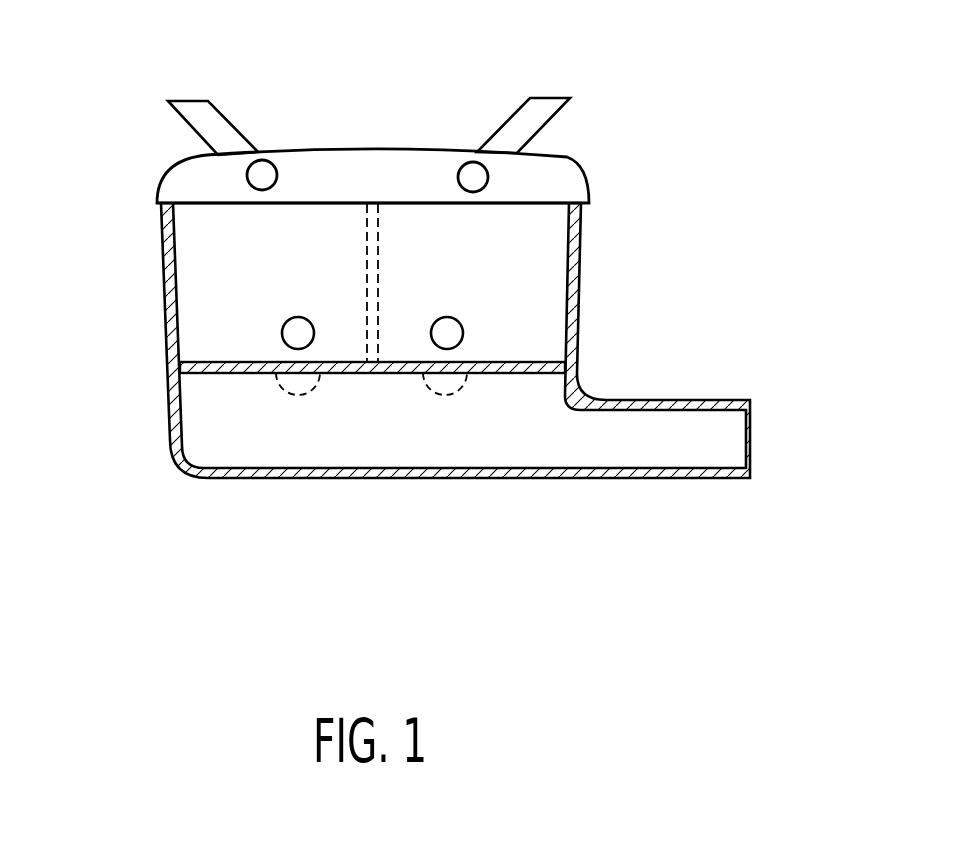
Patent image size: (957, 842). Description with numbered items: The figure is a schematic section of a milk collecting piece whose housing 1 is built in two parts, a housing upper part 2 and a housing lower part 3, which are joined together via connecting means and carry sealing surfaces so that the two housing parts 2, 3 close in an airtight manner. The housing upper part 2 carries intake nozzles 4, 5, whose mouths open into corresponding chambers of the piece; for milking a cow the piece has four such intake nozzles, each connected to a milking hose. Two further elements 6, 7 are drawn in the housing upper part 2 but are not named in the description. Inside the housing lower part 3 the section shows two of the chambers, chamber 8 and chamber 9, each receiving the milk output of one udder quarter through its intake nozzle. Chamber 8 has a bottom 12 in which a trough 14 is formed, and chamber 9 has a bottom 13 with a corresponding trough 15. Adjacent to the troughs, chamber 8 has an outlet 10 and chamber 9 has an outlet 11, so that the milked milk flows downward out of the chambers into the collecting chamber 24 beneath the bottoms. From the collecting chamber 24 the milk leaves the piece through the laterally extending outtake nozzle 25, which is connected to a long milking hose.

The housing 1 is at (142, 502).
The housing upper part 2 is at (563, 177).
The housing lower part 3 is at (165, 308).
The intake nozzle 4 is at (210, 122).
The intake nozzle 5 is at (542, 107).
The first opening in cap 6 is at (262, 173).
The second opening in cap 7 is at (472, 172).
The chamber 8 is at (268, 268).
The chamber 9 is at (490, 267).
The outlet 10 is at (298, 328).
The outlet 11 is at (465, 327).
The bottom 12 is at (215, 370).
The bottom 13 is at (542, 370).
The trough 14 is at (297, 387).
The trough 15 is at (443, 385).
The collecting chamber 24 is at (360, 446).
The outtake nozzle 25 is at (683, 473).